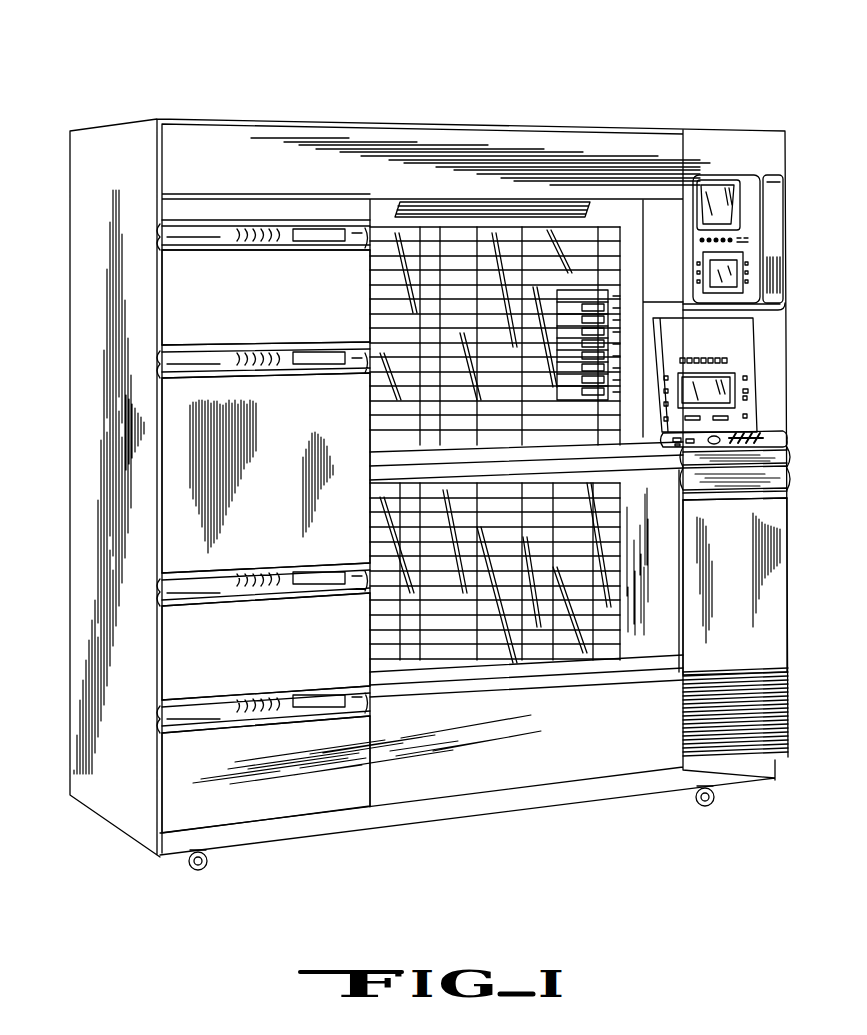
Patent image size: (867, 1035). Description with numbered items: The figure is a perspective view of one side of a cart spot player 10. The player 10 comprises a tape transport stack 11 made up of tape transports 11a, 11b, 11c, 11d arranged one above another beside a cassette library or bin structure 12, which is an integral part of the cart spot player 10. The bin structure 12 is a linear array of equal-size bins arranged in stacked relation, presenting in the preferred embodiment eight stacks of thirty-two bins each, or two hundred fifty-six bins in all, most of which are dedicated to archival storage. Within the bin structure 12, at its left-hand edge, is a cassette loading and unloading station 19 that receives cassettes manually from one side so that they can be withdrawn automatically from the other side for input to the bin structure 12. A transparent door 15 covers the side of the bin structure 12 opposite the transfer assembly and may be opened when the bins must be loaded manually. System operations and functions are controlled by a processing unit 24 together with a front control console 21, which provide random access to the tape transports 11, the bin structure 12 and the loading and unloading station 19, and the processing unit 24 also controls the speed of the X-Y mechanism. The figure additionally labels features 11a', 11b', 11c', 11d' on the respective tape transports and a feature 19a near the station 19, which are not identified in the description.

The cart spot player 10 is at (258, 82).
The tape transport stack 11 is at (168, 400).
The tape transport 11a is at (266, 297).
The tape transport 11b is at (266, 473).
The tape transport 11c is at (266, 646).
The tape transport 11d is at (351, 774).
The handle of first drawer 11a' is at (331, 256).
The handle of second drawer 11b' is at (331, 379).
The handle of third drawer 11c' is at (330, 602).
The handle of fourth drawer 11d' is at (331, 720).
The cassette library 12 is at (573, 261).
The transparent door 15 is at (462, 633).
The cassette loading and unloading station 19 is at (617, 293).
The control panel 19a is at (612, 406).
The front control console 21 is at (761, 430).
The processing unit 24 is at (704, 620).